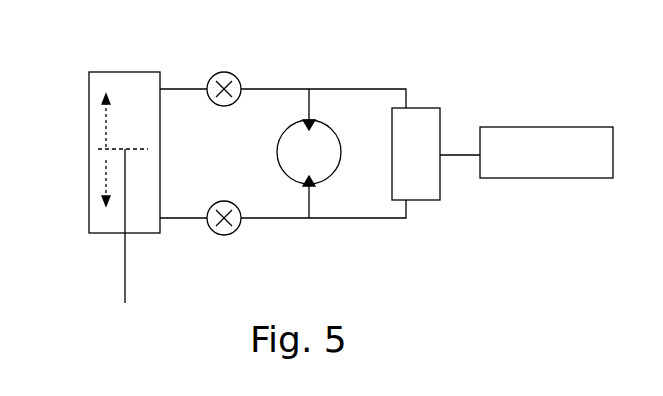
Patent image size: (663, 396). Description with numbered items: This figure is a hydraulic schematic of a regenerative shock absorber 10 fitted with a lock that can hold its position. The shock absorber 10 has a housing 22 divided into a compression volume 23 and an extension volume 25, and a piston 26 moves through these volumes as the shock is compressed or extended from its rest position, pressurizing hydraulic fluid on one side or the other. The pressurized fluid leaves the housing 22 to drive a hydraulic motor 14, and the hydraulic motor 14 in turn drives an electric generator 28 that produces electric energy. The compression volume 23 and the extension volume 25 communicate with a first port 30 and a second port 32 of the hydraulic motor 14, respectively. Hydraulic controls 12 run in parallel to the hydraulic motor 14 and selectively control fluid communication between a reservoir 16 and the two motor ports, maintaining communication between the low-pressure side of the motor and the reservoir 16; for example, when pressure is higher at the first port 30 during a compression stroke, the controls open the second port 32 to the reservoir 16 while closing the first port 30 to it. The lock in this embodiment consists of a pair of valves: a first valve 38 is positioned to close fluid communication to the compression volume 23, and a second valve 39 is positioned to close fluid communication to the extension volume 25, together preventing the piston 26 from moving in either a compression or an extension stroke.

The shock absorber 10 is at (116, 56).
The hydraulic controls 12 is at (422, 112).
The hydraulic motor 14 is at (298, 118).
The reservoir 16 is at (500, 132).
The housing 22 is at (88, 85).
The compression volume 23 is at (124, 120).
The extension volume 25 is at (127, 183).
The piston 26 is at (105, 148).
The electric generator 28 is at (128, 218).
The first port 30 is at (312, 124).
The second port 32 is at (314, 190).
The first valve 38 is at (218, 75).
The second valve 39 is at (236, 228).